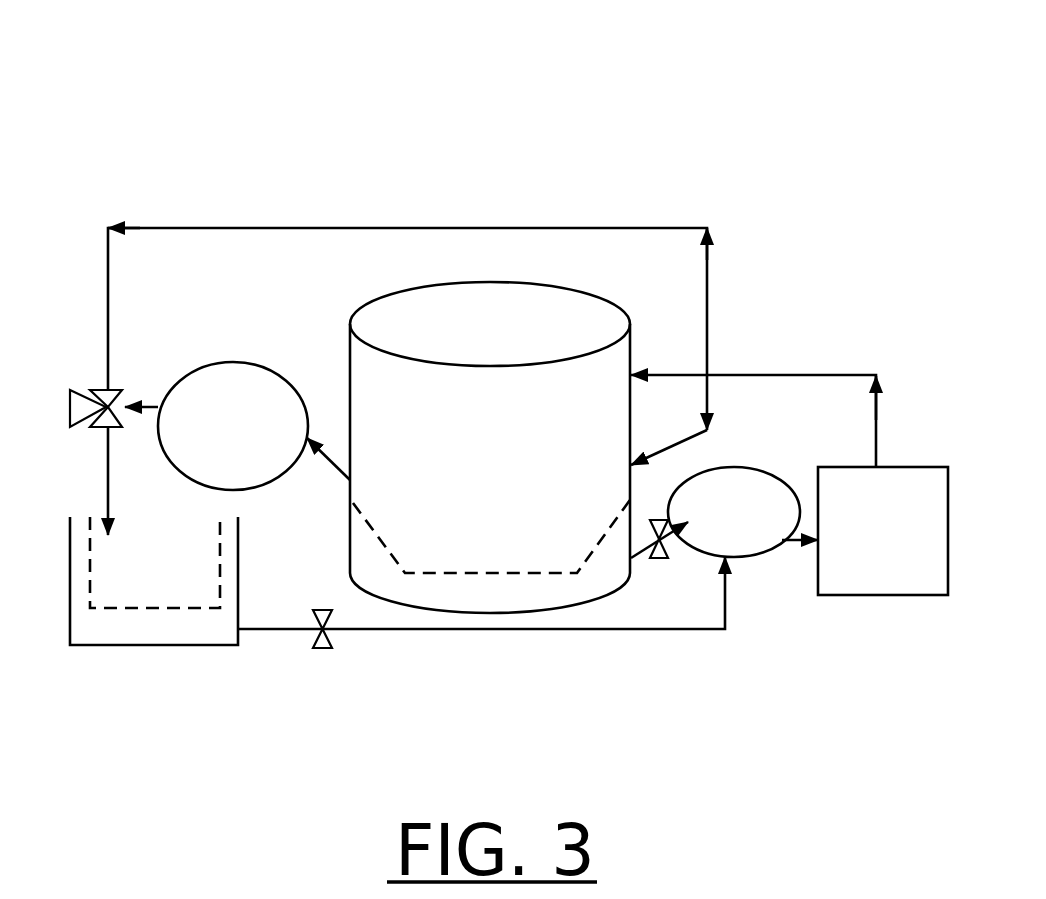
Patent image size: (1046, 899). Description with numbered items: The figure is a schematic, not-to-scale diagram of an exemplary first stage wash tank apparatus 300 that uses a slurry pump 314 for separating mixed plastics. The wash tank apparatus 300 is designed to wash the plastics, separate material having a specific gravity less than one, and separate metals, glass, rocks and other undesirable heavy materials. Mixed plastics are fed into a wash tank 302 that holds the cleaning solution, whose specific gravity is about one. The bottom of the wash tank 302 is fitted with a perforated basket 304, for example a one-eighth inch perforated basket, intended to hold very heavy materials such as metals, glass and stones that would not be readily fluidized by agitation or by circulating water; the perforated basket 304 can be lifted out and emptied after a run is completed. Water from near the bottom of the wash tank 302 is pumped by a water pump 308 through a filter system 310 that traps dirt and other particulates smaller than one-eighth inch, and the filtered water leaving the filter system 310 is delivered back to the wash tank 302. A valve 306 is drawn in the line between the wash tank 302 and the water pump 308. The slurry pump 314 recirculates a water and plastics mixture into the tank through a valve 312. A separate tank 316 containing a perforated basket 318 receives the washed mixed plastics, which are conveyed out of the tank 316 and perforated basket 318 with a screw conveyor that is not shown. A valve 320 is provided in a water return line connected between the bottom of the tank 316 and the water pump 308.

The wash tank apparatus 300 is at (478, 86).
The wash tank 302 is at (468, 327).
The perforated basket 304 is at (472, 573).
The valve 306 is at (660, 559).
The water pump 308 is at (734, 512).
The filter system 310 is at (883, 531).
The valve 312 is at (125, 400).
The slurry pump 314 is at (233, 426).
The separate tank 316 is at (193, 648).
The perforated basket 318 is at (135, 612).
The valve 320 is at (320, 646).